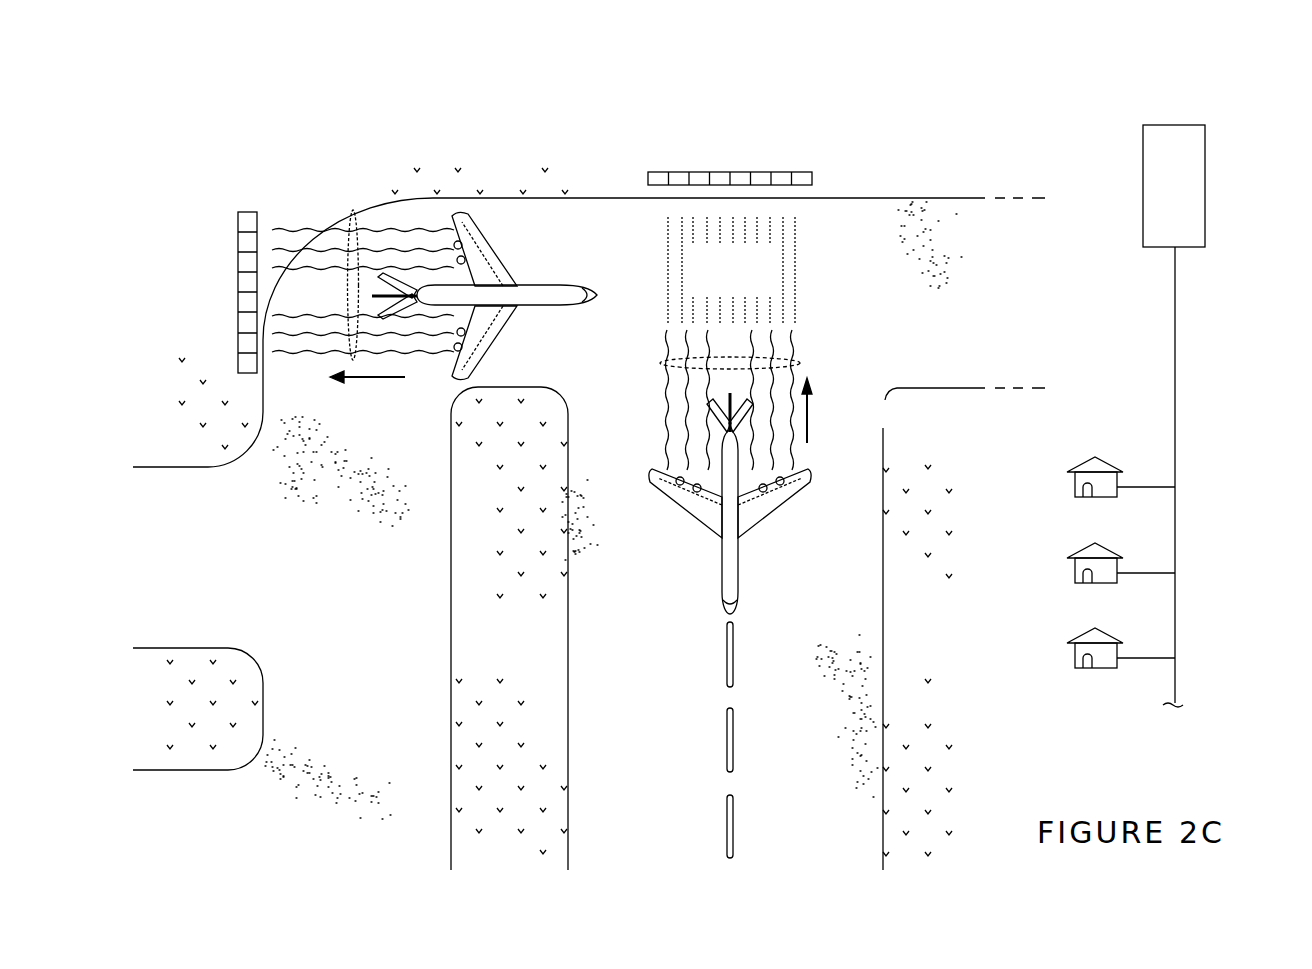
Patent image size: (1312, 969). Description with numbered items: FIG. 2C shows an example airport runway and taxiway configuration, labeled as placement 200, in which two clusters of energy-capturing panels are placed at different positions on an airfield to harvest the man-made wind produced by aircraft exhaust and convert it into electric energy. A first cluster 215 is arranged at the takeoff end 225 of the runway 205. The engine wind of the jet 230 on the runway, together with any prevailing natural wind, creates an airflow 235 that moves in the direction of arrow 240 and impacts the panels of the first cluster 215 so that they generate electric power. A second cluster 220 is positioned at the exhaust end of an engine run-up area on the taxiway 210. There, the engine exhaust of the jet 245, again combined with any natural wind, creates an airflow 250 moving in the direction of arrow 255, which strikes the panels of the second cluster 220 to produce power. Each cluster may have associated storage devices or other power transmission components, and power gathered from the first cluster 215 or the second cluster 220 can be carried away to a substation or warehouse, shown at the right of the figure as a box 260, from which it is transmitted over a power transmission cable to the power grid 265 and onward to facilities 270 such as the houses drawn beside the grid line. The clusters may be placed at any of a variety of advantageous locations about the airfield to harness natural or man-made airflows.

The placement 200 is at (136, 94).
The runway 205 is at (682, 740).
The taxiway 210 is at (453, 628).
The first cluster of ECPs 215 is at (648, 178).
The second cluster of ECPs 220 is at (249, 210).
The takeoff end 225 is at (790, 250).
The jet 230 is at (741, 560).
The airflow 235 is at (800, 362).
The arrow 240 is at (812, 420).
The jet 245 is at (545, 283).
The airflow 250 is at (352, 211).
The arrow 255 is at (374, 383).
The server 260 is at (1207, 182).
The power grid 265 is at (1178, 452).
The client devices 270 is at (1108, 465).